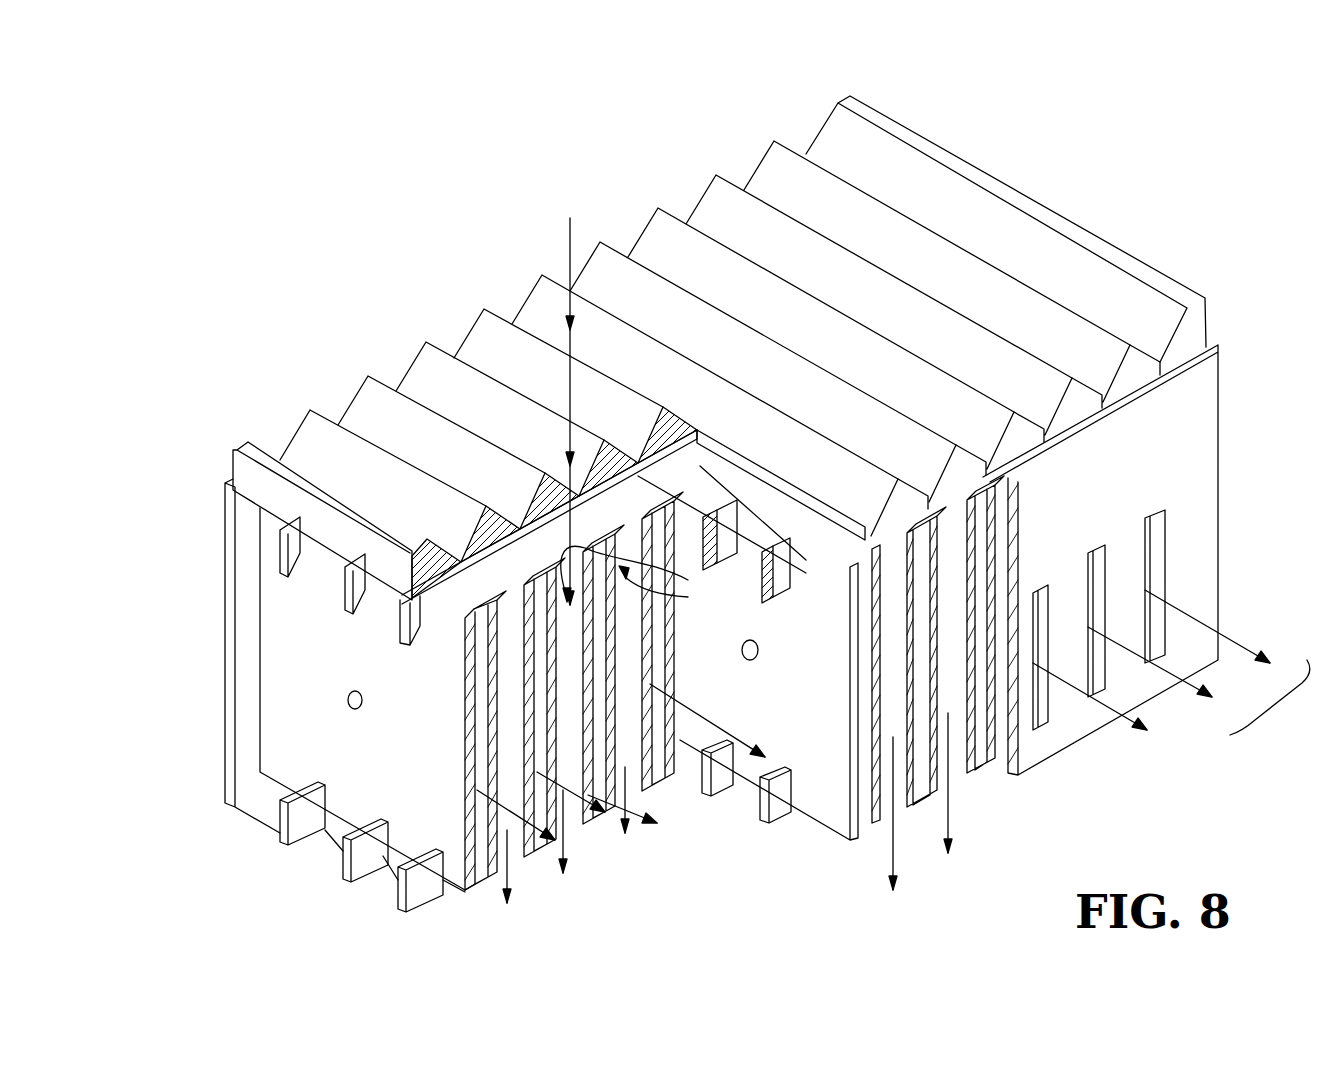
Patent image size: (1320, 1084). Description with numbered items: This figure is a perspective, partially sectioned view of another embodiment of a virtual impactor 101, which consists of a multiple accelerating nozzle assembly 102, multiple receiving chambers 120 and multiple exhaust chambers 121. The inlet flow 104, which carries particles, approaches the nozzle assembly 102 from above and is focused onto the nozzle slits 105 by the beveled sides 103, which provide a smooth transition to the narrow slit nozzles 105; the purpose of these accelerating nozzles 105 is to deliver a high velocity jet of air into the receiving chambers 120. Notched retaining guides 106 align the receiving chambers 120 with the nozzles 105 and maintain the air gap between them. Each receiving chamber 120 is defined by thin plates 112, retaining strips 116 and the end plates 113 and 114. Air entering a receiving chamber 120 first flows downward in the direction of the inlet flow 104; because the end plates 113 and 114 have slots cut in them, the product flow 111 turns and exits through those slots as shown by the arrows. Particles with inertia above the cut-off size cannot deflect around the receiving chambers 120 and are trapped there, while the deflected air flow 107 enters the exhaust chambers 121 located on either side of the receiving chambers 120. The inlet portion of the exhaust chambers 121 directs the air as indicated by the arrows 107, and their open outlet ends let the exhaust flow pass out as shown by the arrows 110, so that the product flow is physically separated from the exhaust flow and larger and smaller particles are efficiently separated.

The virtual impactor 101 is at (1140, 220).
The multiple accelerating nozzle assembly 102 is at (280, 387).
The beveled sides 103 is at (418, 380).
The inlet flow 104 is at (566, 237).
The nozzle slits 105 is at (510, 533).
The notched retaining guides 106 is at (363, 597).
The deflected air flows 107 is at (644, 574).
The exhaust flow arrows 110 is at (493, 893).
The product flow 111 is at (1171, 681).
The thin plates 112 is at (483, 680).
The end plate 113 is at (220, 775).
The end plate 114 is at (1148, 489).
The retaining strips 116 is at (468, 887).
The receiving chambers 120 is at (485, 755).
The exhaust chambers 121 is at (990, 770).